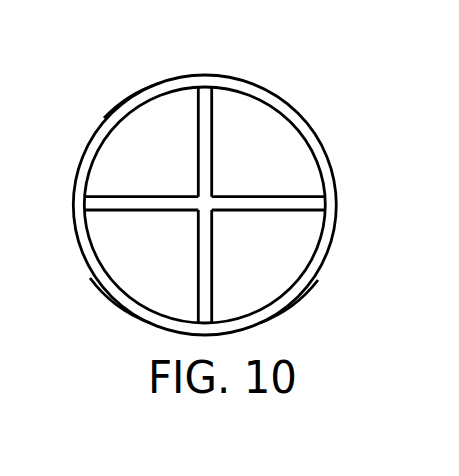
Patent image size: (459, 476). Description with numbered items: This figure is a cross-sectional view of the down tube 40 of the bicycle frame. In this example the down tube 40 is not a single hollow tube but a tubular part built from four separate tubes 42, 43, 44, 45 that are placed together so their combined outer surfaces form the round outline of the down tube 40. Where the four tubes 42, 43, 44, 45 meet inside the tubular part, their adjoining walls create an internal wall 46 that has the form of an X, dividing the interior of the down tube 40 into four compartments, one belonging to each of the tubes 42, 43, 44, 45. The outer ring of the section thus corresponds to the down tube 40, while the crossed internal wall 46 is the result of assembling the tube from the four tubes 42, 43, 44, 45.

The down tube 40 is at (298, 110).
The tube 42 is at (323, 158).
The tube 43 is at (295, 295).
The tube 44 is at (110, 293).
The tube 45 is at (123, 108).
The internal wall 46 is at (203, 93).